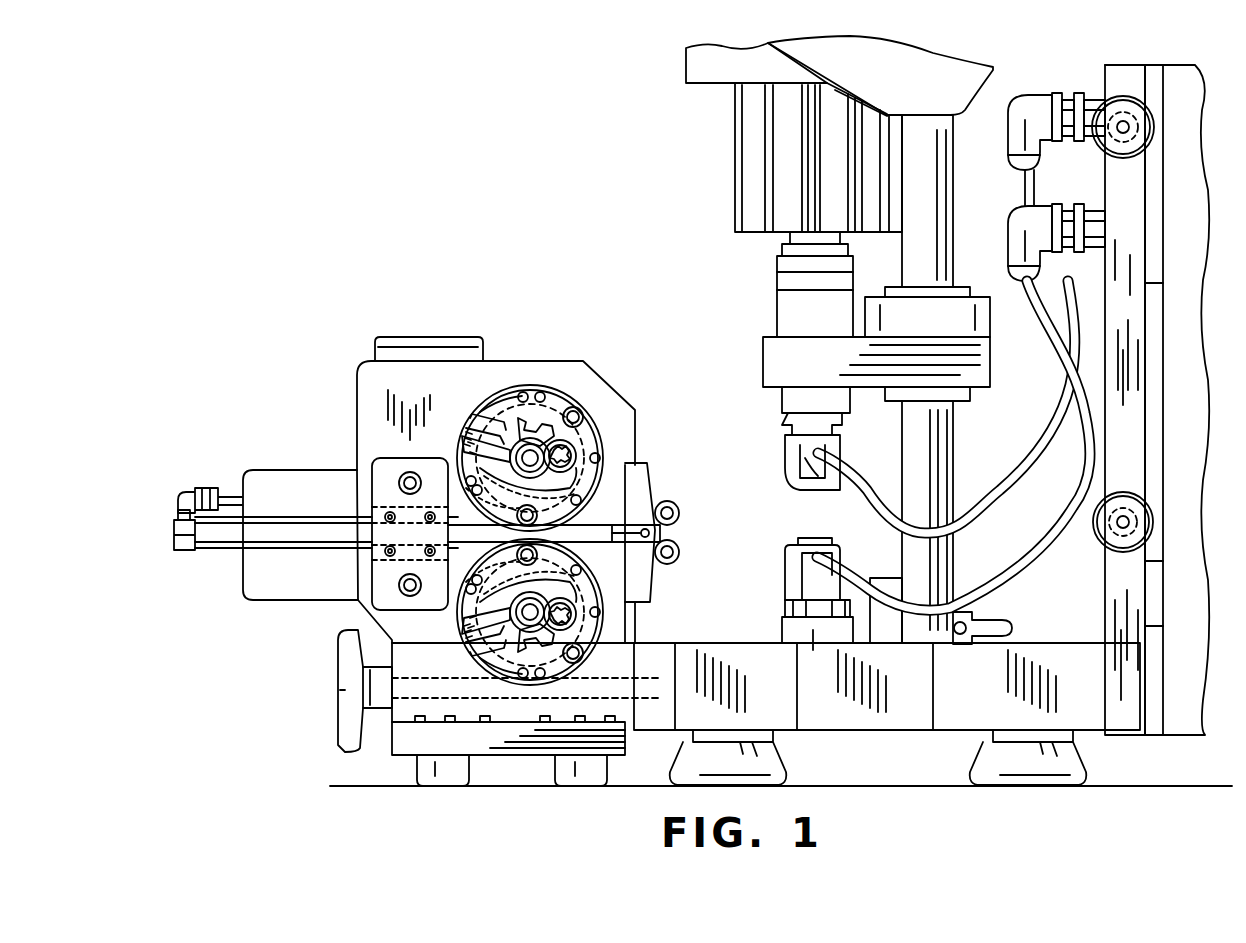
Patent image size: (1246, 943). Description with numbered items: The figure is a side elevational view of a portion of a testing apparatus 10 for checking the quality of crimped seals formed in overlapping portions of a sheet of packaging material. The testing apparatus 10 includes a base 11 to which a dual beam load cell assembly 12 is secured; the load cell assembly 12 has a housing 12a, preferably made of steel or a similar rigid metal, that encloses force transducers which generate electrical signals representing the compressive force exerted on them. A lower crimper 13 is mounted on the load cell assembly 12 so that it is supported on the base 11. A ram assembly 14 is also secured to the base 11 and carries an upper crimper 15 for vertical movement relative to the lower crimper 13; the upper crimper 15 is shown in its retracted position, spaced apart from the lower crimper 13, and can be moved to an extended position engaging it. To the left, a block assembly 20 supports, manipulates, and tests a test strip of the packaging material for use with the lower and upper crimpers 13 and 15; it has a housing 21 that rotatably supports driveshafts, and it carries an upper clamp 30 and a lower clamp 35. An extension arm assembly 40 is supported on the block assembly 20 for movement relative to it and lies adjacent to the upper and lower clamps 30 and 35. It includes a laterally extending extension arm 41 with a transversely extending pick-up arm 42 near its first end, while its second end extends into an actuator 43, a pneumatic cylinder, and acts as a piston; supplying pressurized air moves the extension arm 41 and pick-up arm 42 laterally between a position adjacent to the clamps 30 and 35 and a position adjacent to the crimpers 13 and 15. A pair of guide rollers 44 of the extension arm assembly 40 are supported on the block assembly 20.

The testing apparatus 10 is at (450, 188).
The base 11 is at (915, 717).
The load cell assembly 12 is at (768, 623).
The housing 12a is at (815, 640).
The lower crimper 13 is at (788, 565).
The ram assembly 14 is at (745, 272).
The upper crimper 15 is at (795, 432).
The block assembly 20 is at (305, 368).
The housing 21 is at (480, 378).
The upper clamp 30 is at (588, 392).
The lower clamp 35 is at (445, 642).
The extension arm assembly 40 is at (222, 575).
The extension arm 41 is at (600, 527).
The pick-up arm 42 is at (625, 530).
The actuator 43 is at (300, 527).
The guide rollers 44 is at (678, 548).